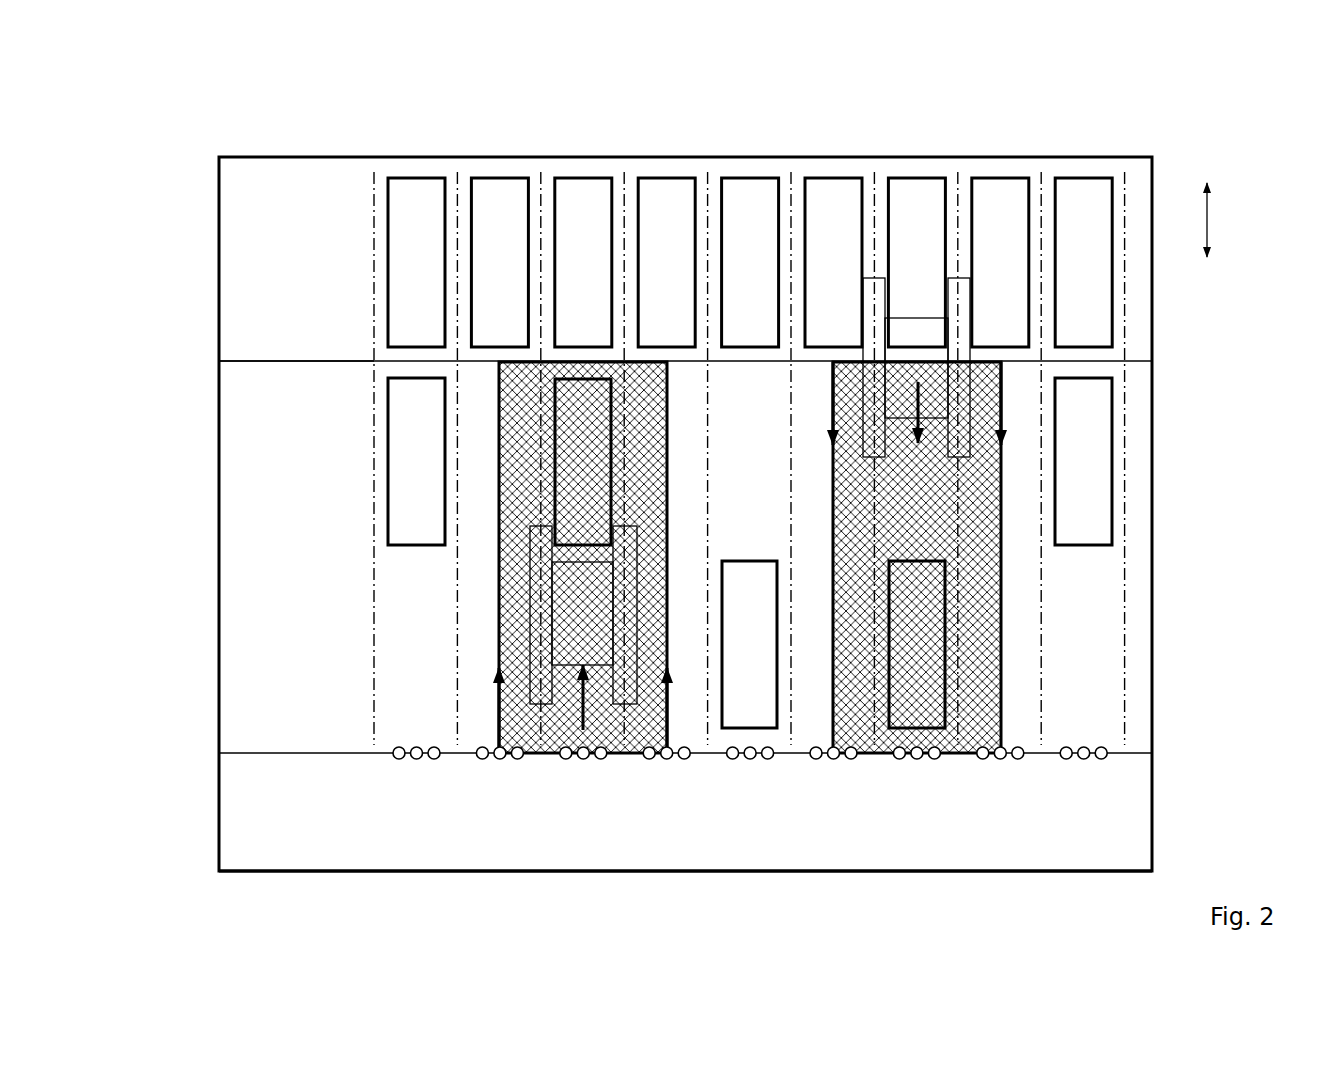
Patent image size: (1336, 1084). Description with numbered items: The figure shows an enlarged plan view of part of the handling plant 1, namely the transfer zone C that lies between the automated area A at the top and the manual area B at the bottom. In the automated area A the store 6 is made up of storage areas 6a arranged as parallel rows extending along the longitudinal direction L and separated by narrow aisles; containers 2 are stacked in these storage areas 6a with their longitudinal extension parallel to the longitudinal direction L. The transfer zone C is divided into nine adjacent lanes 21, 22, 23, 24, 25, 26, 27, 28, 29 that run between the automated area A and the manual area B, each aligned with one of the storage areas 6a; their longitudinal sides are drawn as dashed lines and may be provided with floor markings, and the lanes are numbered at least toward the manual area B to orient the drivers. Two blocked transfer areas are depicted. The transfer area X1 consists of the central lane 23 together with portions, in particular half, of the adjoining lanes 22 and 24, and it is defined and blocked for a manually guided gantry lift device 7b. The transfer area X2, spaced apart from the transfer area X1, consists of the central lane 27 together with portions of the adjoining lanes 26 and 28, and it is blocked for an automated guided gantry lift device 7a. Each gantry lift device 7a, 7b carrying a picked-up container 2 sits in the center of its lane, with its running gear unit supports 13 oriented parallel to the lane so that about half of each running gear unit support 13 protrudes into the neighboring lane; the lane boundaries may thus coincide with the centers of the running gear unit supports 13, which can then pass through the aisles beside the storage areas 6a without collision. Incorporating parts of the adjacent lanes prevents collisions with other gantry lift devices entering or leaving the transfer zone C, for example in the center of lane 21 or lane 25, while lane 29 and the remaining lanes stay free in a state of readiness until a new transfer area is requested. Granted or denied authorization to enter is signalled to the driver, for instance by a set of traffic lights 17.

The handling plant 1 is at (186, 152).
The container 2 is at (930, 648).
The store 6 is at (1115, 178).
The storage area 6a is at (822, 170).
The automated guided gantry lift device 7a is at (935, 400).
The manually guided gantry lift device 7b is at (575, 633).
The running gear unit support 13 is at (615, 556).
The set of traffic lights 17 is at (1090, 730).
The lane 21 is at (416, 585).
The lane 22 is at (499, 770).
The lane 23 is at (583, 770).
The lane 24 is at (666, 770).
The lane 25 is at (749, 677).
The lane 26 is at (833, 770).
The lane 27 is at (916, 770).
The lane 28 is at (1000, 770).
The lane 29 is at (1083, 585).
The automated area A is at (300, 198).
The manual area B is at (305, 835).
The transfer zone C is at (280, 541).
The longitudinal direction L is at (1218, 220).
The transfer area X1 is at (497, 616).
The transfer area X2 is at (1003, 488).